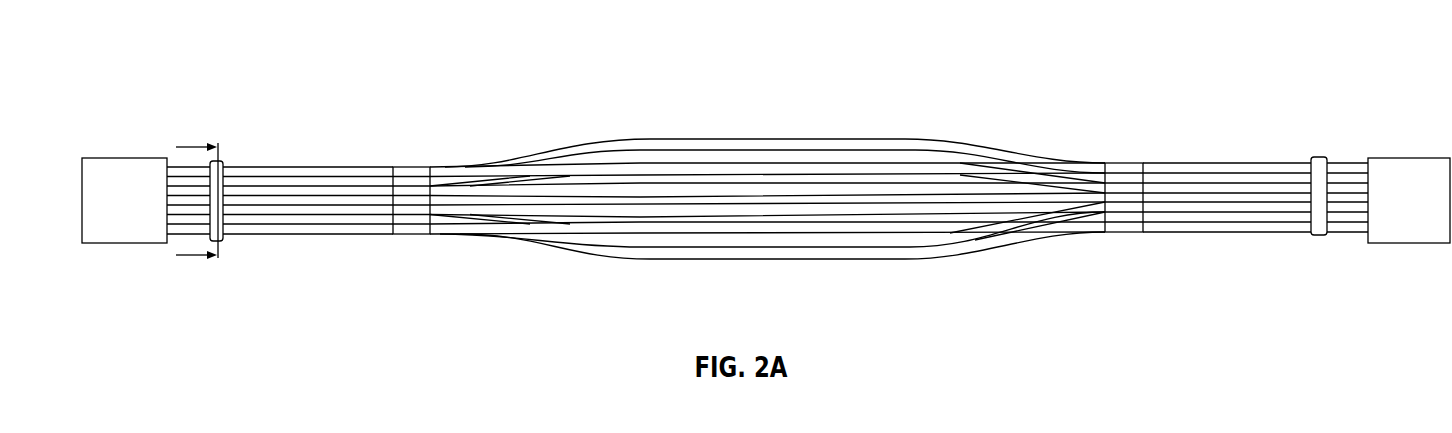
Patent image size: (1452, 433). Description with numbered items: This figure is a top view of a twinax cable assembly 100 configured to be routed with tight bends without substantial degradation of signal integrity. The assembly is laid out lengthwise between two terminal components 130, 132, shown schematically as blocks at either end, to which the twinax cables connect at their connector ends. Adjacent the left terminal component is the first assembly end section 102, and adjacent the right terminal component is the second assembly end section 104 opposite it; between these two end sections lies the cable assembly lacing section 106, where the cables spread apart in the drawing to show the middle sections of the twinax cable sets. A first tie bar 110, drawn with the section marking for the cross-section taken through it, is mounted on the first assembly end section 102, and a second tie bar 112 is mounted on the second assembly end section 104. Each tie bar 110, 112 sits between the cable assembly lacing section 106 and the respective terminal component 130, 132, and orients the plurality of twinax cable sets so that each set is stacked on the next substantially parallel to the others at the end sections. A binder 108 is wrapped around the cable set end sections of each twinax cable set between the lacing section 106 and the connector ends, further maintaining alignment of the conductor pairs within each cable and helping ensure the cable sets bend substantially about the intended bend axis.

The twinax cable assembly 100 is at (412, 62).
The first assembly end section 102 is at (288, 147).
The second assembly end section 104 is at (1217, 148).
The cable assembly lacing section 106 is at (788, 137).
The binder 108 is at (410, 167).
The first tie bar 110 is at (223, 170).
The second tie bar 112 is at (1318, 157).
The terminal component 130 is at (122, 157).
The terminal component 132 is at (1388, 158).